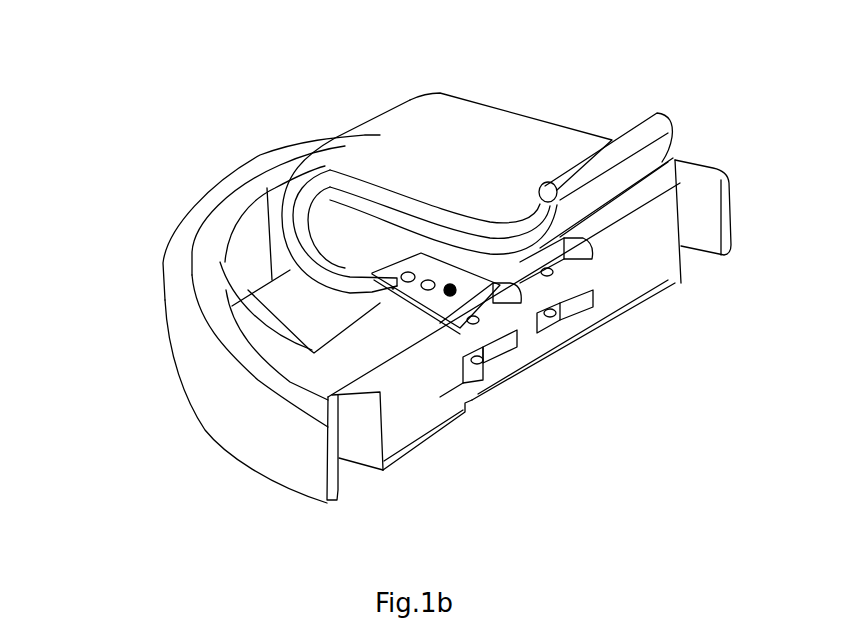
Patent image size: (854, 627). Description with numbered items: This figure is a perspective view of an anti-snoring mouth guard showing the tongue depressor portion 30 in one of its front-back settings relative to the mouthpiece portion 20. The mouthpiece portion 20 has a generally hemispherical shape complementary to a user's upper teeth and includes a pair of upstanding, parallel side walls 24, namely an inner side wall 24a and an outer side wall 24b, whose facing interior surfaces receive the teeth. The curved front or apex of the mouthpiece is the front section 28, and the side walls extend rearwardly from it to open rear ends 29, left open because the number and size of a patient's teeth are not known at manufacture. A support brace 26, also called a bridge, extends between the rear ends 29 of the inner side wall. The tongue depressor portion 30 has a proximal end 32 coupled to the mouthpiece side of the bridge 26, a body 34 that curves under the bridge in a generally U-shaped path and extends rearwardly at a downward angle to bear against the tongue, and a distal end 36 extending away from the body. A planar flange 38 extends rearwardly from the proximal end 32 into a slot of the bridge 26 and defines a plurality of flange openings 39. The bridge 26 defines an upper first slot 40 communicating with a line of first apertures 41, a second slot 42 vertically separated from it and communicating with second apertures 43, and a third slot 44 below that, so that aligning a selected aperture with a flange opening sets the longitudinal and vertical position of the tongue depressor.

The mouthpiece portion 20 is at (160, 198).
The side walls 24 is at (358, 496).
The inner side wall 24a is at (345, 440).
The outer side wall 24b is at (205, 398).
The support brace 26 is at (668, 272).
The front section 28 is at (245, 170).
The rear ends 29 is at (370, 450).
The tongue depressor portion 30 is at (503, 155).
The proximal end 32 is at (367, 263).
The body 34 is at (450, 133).
The distal end 36 is at (653, 128).
The flange 38 is at (393, 288).
The flange openings 39 is at (426, 290).
The first slot 40 is at (572, 265).
The second slot 42 is at (578, 303).
The second apertures 43 is at (552, 318).
The third slot 44 is at (494, 375).
The first apertures 41 is at (474, 335).